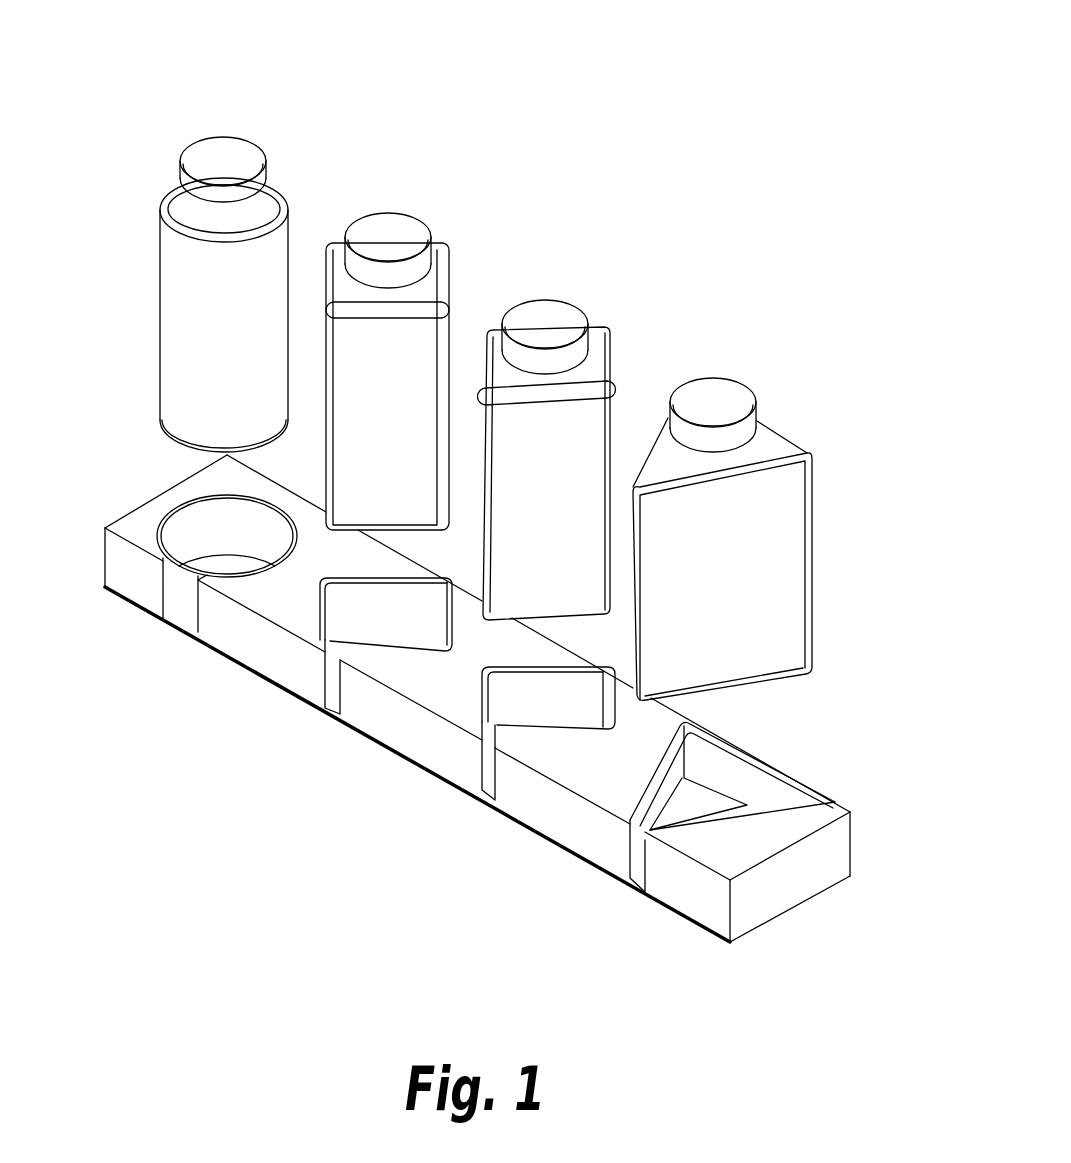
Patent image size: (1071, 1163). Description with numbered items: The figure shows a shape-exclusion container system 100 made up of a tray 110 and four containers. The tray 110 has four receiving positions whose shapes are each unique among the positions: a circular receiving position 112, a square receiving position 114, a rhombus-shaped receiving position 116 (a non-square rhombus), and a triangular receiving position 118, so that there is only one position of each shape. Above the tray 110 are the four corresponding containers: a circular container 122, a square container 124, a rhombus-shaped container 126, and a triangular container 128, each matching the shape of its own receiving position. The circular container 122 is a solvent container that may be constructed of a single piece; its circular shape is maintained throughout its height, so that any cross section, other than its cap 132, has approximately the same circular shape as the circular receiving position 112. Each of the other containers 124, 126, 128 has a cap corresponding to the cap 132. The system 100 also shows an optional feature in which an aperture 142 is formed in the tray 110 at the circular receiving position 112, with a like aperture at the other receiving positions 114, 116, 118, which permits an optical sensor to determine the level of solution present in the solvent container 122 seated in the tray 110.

The shape-exclusion container system 100 is at (637, 90).
The tray 110 is at (793, 942).
The circular receiving position 112 is at (161, 640).
The square receiving position 114 is at (309, 735).
The rhombus-shaped receiving position 116 is at (463, 822).
The triangular receiving position 118 is at (618, 900).
The circular container 122 is at (291, 149).
The square container 124 is at (454, 211).
The rhombus-shaped container 126 is at (609, 298).
The triangular container 128 is at (804, 416).
The cap 132 is at (169, 147).
The aperture 142 is at (168, 597).